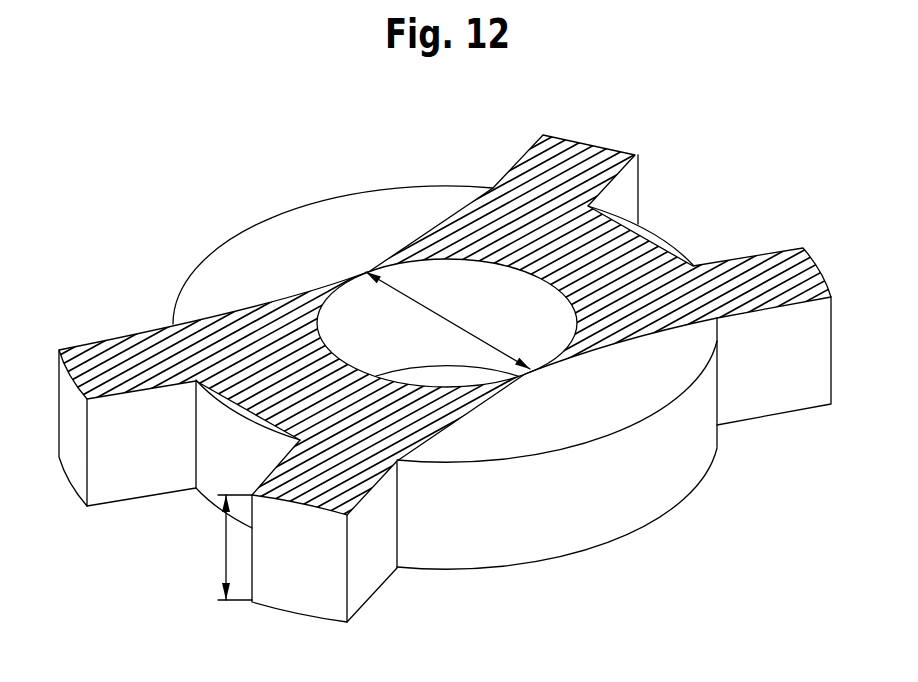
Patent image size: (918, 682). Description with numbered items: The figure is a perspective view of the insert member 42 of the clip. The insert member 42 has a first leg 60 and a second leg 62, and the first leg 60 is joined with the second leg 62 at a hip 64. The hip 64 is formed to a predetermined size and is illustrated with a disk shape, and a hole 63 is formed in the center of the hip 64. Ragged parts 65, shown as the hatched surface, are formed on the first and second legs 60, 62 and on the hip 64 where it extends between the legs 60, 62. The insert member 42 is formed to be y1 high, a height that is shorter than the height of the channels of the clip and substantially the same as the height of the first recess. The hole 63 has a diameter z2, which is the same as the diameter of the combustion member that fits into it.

The insert member 42 is at (763, 182).
The first leg 60 is at (831, 357).
The second leg 62 is at (587, 144).
The hole 63 is at (421, 356).
The hip 64 is at (321, 256).
The ragged parts 65 is at (428, 234).
The diameter of the hole z2 is at (448, 320).
The height of the insert member y1 is at (221, 547).